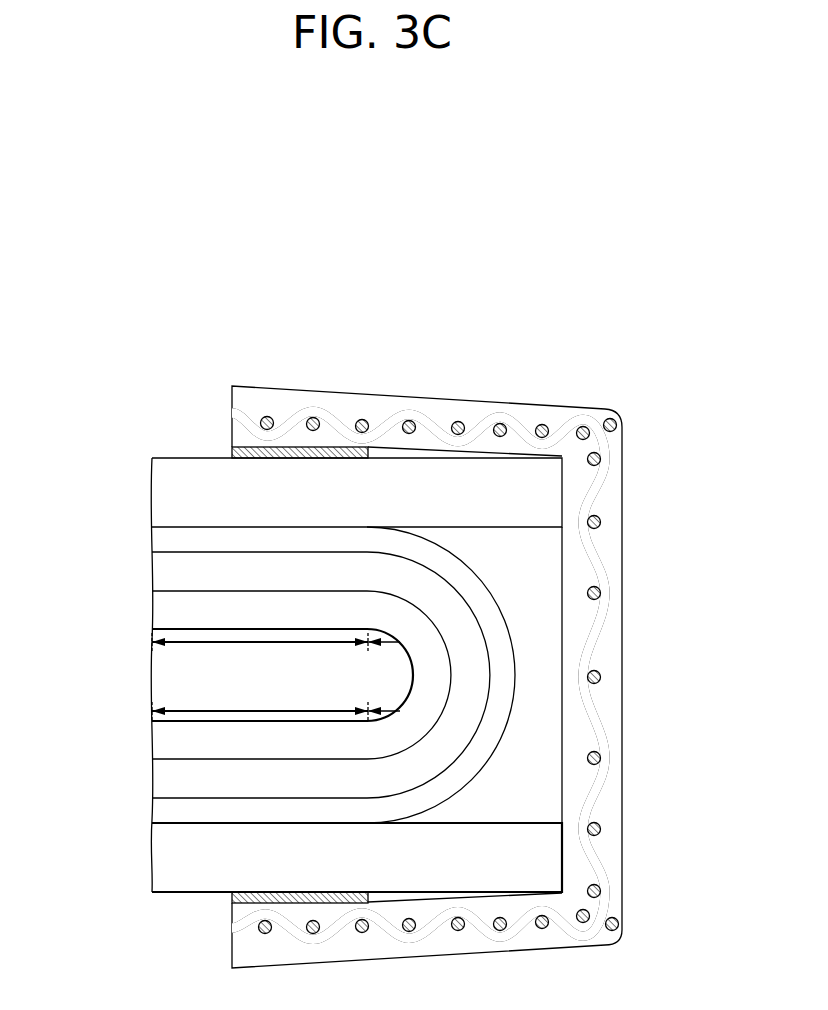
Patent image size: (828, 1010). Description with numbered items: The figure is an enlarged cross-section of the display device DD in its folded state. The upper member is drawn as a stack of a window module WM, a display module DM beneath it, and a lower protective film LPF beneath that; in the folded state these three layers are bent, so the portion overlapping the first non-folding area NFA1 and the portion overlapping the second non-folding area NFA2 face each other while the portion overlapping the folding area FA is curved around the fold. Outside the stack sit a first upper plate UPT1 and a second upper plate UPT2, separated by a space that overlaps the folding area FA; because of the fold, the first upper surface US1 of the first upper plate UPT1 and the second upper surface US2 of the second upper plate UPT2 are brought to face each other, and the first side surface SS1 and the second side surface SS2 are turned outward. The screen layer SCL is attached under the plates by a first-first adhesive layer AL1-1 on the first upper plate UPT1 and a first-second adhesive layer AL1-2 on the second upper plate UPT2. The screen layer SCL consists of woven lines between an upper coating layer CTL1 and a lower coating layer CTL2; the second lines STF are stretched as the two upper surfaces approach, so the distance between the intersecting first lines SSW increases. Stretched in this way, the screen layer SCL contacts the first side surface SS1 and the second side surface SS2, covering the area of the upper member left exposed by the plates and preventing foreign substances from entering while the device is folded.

The display device DD is at (624, 292).
The screen layer SCL is at (224, 395).
The first-second adhesive layer AL1-2 is at (232, 452).
The first-first adhesive layer AL1-1 is at (232, 897).
The lower coating layer CTL2 is at (259, 404).
The upper coating layer CTL1 is at (385, 434).
The second lines STF is at (319, 416).
The first lines SSW is at (457, 420).
The second side surface SS2 is at (562, 490).
The first side surface SS1 is at (562, 857).
The second upper surface US2 is at (530, 528).
The first upper surface US1 is at (530, 823).
The second upper plate UPT2 is at (160, 490).
The first upper plate UPT1 is at (160, 858).
The lower protective film LPF is at (160, 539).
The display module DM is at (160, 575).
The window module WM is at (160, 609).
The second non-folding area NFA2 is at (260, 652).
The first non-folding area NFA1 is at (260, 702).
The folding area FA is at (384, 676).